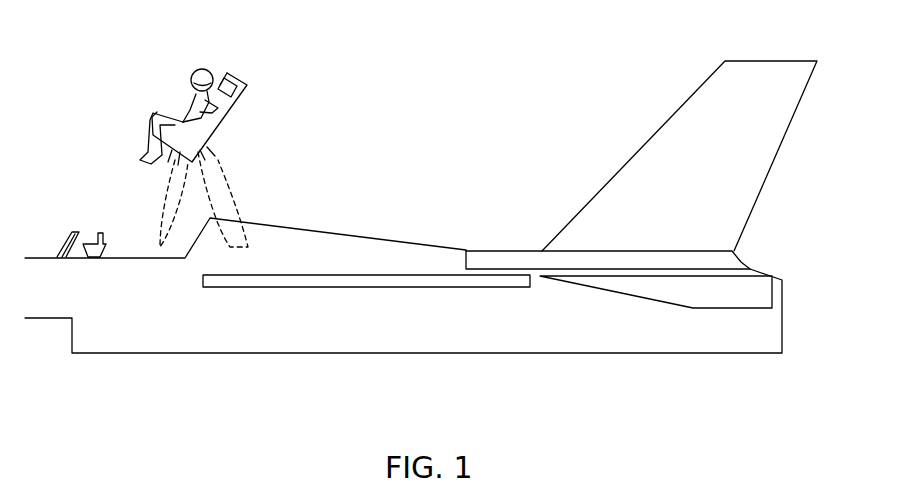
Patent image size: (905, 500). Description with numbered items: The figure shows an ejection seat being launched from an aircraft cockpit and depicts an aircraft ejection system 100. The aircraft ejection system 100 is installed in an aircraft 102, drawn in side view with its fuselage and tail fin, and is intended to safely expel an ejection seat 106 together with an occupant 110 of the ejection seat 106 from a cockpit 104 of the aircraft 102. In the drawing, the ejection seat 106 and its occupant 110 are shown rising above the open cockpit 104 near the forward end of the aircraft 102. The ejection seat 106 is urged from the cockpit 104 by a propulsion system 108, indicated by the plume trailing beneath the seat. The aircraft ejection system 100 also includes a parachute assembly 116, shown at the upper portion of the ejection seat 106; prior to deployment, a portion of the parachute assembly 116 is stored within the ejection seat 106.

The aircraft ejection system 100 is at (421, 191).
The aircraft 102 is at (432, 324).
The cockpit 104 is at (120, 244).
The ejection seat 106 is at (241, 108).
The propulsion system 108 is at (218, 182).
The occupant 110 is at (195, 70).
The parachute assembly 116 is at (240, 78).